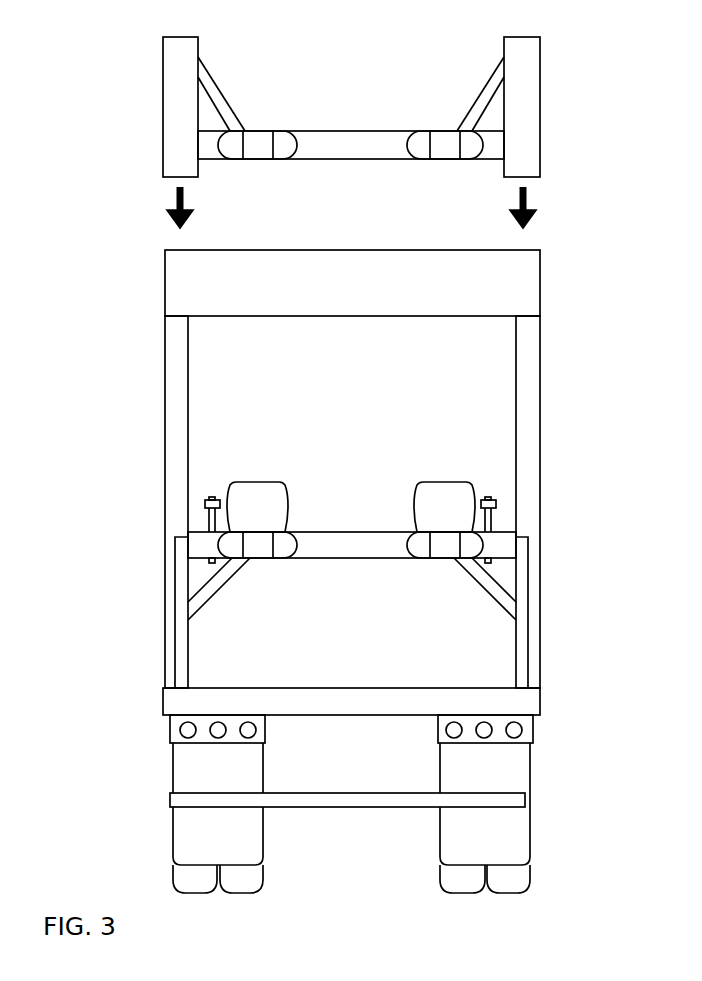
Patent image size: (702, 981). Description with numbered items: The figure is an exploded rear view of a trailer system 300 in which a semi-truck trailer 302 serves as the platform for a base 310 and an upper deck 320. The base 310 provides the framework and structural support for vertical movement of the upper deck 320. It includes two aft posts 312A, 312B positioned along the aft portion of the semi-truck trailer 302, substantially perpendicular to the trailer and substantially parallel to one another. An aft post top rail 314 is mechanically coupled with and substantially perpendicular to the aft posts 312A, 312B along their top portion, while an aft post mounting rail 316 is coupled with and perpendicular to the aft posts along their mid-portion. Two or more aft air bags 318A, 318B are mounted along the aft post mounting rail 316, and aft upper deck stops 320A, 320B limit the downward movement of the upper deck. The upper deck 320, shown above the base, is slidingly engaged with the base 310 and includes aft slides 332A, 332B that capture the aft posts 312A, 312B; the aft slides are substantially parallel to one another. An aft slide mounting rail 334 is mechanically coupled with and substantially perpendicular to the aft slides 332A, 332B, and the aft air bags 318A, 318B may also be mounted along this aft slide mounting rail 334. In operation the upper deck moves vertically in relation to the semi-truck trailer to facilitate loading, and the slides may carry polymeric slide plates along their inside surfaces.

The trailer system 300 is at (600, 140).
The semi-truck trailer 302 is at (140, 700).
The base 310 is at (140, 248).
The aft post 312A is at (188, 372).
The aft post 312B is at (540, 383).
The aft post top rail 314 is at (540, 282).
The aft post mounting rail 316 is at (322, 558).
The aft air bag 318A is at (258, 482).
The aft air bag 318B is at (446, 480).
The upper deck 320 is at (138, 35).
The aft upper deck stop 320A is at (213, 495).
The aft upper deck stop 320B is at (488, 495).
The aft slide 332A is at (199, 52).
The aft slide 332B is at (504, 53).
The aft slide mounting rail 334 is at (348, 159).